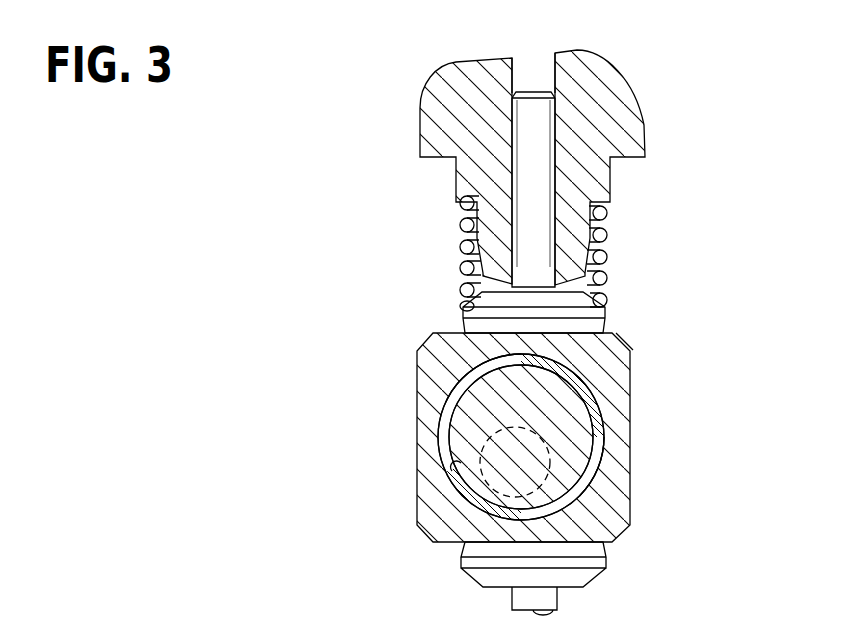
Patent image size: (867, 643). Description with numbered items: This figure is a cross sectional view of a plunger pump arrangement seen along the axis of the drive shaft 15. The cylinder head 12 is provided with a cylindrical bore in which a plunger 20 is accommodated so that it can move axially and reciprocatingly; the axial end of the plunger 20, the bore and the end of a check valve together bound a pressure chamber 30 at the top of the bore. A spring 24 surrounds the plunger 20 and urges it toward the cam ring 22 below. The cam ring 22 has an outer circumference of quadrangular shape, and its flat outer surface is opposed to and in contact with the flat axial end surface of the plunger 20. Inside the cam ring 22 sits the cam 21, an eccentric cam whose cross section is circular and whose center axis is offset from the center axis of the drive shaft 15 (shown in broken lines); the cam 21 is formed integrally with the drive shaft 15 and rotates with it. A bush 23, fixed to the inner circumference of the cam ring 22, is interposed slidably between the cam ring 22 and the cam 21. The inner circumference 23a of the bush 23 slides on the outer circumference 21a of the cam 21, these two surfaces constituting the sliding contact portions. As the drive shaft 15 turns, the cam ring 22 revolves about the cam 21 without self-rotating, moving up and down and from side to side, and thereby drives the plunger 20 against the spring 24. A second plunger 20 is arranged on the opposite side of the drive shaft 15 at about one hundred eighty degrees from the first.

The cylinder head 12 is at (443, 113).
The pressure chamber 30 is at (527, 73).
The plunger 20 is at (545, 181).
The spring 24 is at (462, 223).
The cam ring 22 is at (423, 397).
The cam 21 is at (563, 425).
The outer circumference of the cam 21a is at (475, 384).
The bush 23 is at (595, 465).
The inner circumference of the bush 23a is at (457, 470).
The drive shaft 15 is at (565, 482).